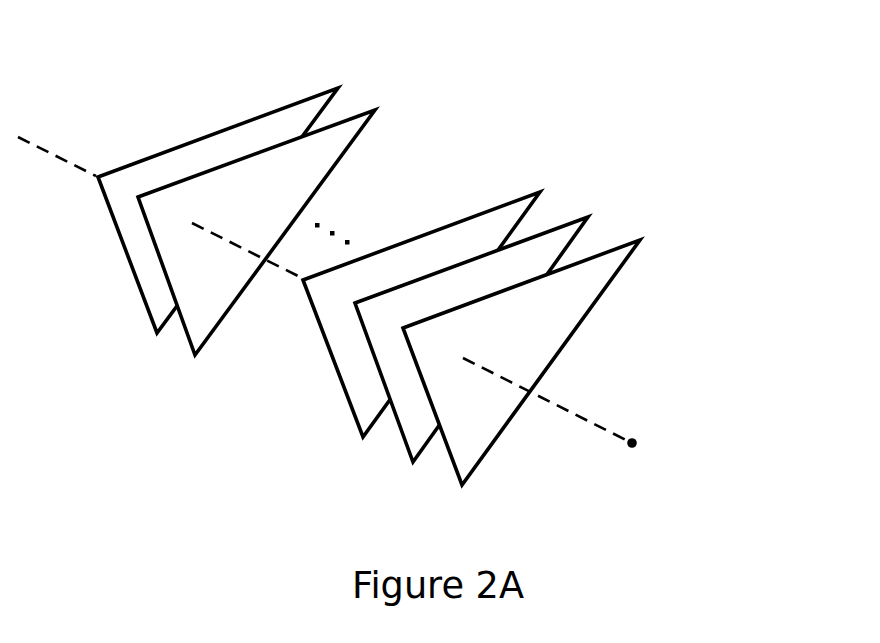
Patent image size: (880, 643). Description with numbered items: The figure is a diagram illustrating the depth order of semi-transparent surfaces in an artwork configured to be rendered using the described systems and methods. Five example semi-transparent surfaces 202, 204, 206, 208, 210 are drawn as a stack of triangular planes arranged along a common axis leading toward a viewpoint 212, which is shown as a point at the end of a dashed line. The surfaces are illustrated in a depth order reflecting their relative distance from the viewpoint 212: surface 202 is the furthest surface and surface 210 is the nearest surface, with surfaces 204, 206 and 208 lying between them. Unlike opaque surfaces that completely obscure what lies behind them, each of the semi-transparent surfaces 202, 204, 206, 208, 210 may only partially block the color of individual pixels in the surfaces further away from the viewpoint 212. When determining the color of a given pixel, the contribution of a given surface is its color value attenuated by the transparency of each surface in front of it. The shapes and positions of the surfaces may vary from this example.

The semi-transparent surface 202 is at (338, 80).
The semi-transparent surface 204 is at (375, 100).
The semi-transparent surface 206 is at (540, 182).
The semi-transparent surface 208 is at (590, 207).
The semi-transparent surface 210 is at (640, 232).
The viewpoint 212 is at (632, 427).